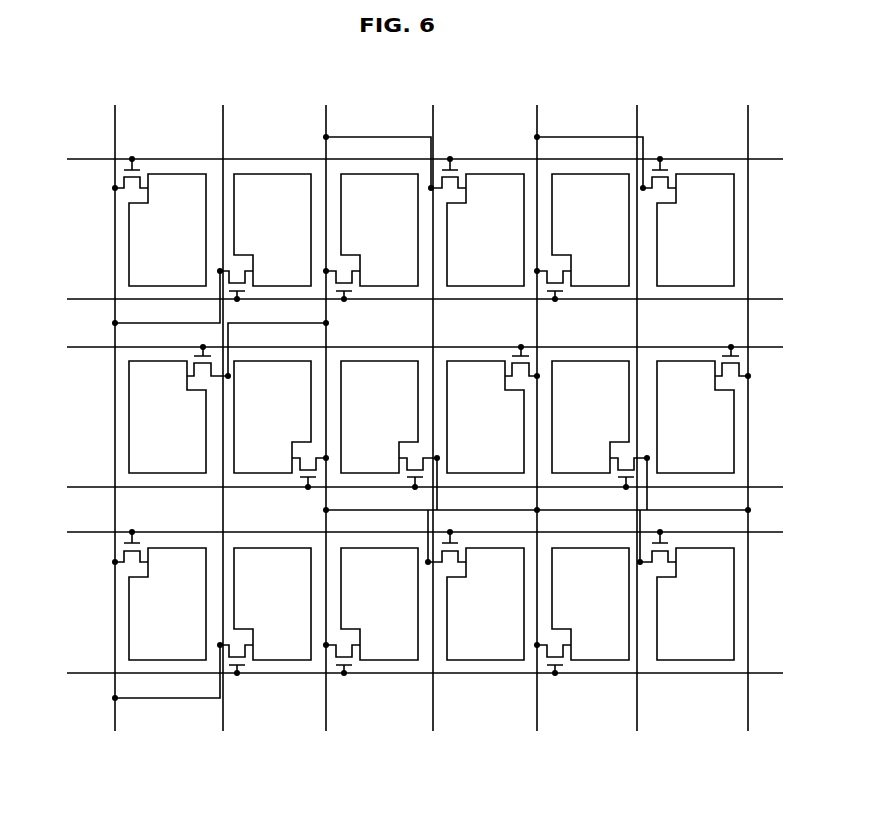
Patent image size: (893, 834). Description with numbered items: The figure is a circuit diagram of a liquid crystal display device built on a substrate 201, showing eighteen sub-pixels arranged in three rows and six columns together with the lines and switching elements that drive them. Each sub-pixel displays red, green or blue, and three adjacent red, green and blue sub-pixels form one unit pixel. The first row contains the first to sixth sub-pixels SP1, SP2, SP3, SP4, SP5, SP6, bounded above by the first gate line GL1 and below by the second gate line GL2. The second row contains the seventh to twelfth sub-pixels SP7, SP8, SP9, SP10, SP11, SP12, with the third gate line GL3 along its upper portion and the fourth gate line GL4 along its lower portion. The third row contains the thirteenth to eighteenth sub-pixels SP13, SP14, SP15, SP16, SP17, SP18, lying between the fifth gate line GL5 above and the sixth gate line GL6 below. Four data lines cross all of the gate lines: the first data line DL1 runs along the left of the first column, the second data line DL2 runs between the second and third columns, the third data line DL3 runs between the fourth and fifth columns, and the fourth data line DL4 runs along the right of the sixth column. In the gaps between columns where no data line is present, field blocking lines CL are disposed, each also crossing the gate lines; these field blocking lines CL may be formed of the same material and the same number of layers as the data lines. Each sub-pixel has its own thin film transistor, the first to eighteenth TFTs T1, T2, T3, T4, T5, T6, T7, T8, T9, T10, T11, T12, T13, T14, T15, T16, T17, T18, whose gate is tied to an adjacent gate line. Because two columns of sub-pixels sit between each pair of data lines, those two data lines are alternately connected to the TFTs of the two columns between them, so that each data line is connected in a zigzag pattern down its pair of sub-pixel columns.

The substrate 201 is at (447, 804).
The first gate line GL1 is at (407, 160).
The second gate line GL2 is at (407, 300).
The third gate line GL3 is at (407, 348).
The fourth gate line GL4 is at (407, 488).
The fifth gate line GL5 is at (407, 533).
The sixth gate line GL6 is at (407, 674).
The first data line DL1 is at (117, 406).
The second data line DL2 is at (328, 406).
The third data line DL3 is at (539, 406).
The fourth data line DL4 is at (750, 406).
The field blocking line CL is at (431, 406).
The first sub-pixel SP1 is at (167, 230).
The second sub-pixel SP2 is at (272, 230).
The third sub-pixel SP3 is at (379, 230).
The fourth sub-pixel SP4 is at (485, 230).
The fifth sub-pixel SP5 is at (590, 230).
The sixth sub-pixel SP6 is at (695, 230).
The seventh sub-pixel SP7 is at (167, 417).
The eighth sub-pixel SP8 is at (272, 417).
The ninth sub-pixel SP9 is at (379, 417).
The tenth sub-pixel SP10 is at (485, 417).
The eleventh sub-pixel SP11 is at (590, 417).
The twelfth sub-pixel SP12 is at (695, 417).
The thirteenth sub-pixel SP13 is at (167, 604).
The fourteenth sub-pixel SP14 is at (272, 604).
The fifteenth sub-pixel SP15 is at (379, 604).
The sixteenth sub-pixel SP16 is at (485, 604).
The seventeenth sub-pixel SP17 is at (590, 604).
The eighteenth sub-pixel SP18 is at (695, 604).
The first thin film transistor T1 is at (130, 163).
The second thin film transistor T2 is at (182, 285).
The third thin film transistor T3 is at (294, 322).
The fourth thin film transistor T4 is at (394, 162).
The fifth thin film transistor T5 is at (552, 297).
The sixth thin film transistor T6 is at (605, 162).
The seventh thin film transistor T7 is at (209, 351).
The eighth thin film transistor T8 is at (310, 485).
The ninth thin film transistor T9 is at (431, 485).
The tenth thin film transistor T10 is at (521, 351).
The eleventh thin film transistor T11 is at (644, 485).
The twelfth thin film transistor T12 is at (731, 351).
The thirteenth thin film transistor T13 is at (132, 537).
The fourteenth thin film transistor T14 is at (184, 672).
The fifteenth thin film transistor T15 is at (343, 672).
The sixteenth thin film transistor T16 is at (448, 537).
The seventeenth thin film transistor T17 is at (554, 672).
The eighteenth thin film transistor T18 is at (658, 537).